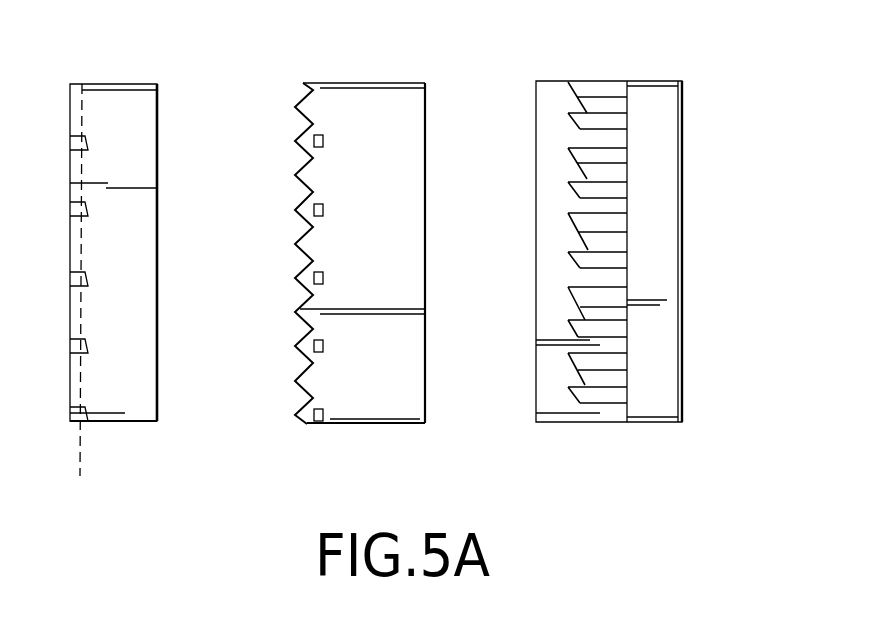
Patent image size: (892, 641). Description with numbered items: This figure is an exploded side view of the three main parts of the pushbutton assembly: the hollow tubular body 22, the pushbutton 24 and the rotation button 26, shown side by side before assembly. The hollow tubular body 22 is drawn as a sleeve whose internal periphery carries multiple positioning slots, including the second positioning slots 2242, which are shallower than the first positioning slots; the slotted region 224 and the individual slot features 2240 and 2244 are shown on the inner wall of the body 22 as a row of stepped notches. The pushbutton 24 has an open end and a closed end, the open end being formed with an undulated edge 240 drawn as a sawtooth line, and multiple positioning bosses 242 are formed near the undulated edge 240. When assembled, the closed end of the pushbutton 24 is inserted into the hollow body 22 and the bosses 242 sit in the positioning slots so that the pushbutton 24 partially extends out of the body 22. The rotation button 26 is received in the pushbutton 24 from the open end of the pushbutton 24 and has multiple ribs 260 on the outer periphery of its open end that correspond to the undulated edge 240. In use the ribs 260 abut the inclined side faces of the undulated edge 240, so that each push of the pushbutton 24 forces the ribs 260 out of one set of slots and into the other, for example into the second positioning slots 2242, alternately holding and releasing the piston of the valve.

The hollow tubular body 22 is at (672, 132).
The pushbutton 24 is at (413, 93).
The rotation button 26 is at (142, 93).
The tooth row of first rack member 224 is at (605, 80).
The undulated edge 240 is at (305, 122).
The positioning bosses 242 is at (325, 414).
The ribs 260 is at (92, 294).
The tooth 2240 is at (592, 399).
The second positioning slot 2242 is at (610, 346).
The tooth slanted face 2244 is at (580, 307).